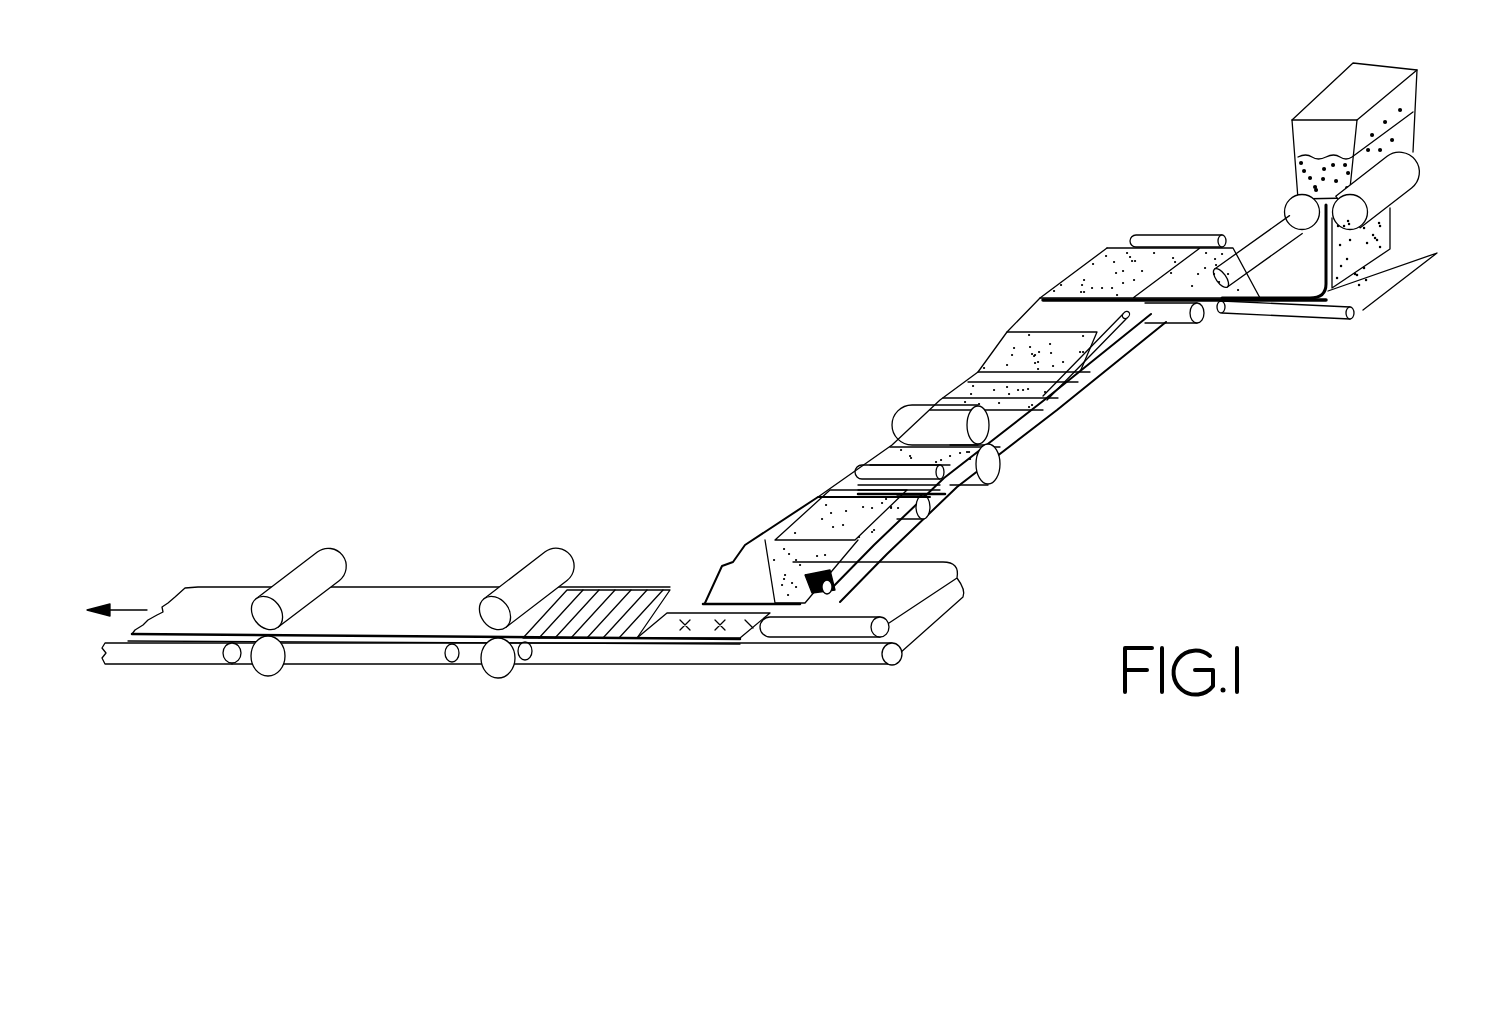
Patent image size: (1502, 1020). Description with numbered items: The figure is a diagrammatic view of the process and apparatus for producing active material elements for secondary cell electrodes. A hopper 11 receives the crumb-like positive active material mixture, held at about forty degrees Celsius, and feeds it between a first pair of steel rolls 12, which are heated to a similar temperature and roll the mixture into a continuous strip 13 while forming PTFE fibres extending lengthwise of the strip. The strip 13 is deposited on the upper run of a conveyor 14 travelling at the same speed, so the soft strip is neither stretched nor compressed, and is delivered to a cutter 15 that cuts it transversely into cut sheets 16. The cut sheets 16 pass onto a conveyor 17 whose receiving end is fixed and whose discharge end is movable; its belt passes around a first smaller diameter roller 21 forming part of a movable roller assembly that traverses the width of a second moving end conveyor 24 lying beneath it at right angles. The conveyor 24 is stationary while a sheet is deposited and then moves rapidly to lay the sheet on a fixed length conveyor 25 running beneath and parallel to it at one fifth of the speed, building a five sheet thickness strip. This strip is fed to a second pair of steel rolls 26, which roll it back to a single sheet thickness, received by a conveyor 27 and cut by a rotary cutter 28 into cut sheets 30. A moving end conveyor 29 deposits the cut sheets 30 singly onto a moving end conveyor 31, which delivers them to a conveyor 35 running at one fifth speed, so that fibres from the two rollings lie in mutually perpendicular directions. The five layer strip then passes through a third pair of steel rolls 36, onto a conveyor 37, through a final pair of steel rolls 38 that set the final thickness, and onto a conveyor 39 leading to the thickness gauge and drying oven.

The hopper 11 is at (1418, 86).
The first pair of steel rolls 12 is at (1413, 165).
The continuous strip 13 is at (1353, 250).
The conveyor 14 is at (1286, 314).
The cutter 15 is at (1272, 232).
The cut sheets 16 is at (1128, 275).
The conveyor 17 is at (1151, 320).
The first smaller diameter roller 21 is at (1043, 300).
The second moving end conveyor 24 is at (1097, 342).
The fixed length conveyor 25 is at (1050, 406).
The second pair of steel rolls 26 is at (910, 424).
The conveyor 27 is at (957, 488).
The rotary cutter 28 is at (858, 470).
The moving end conveyor 29 is at (882, 530).
The cut sheets 30 is at (767, 572).
The moving end conveyor 31 is at (836, 598).
The conveyor 35 is at (737, 647).
The third pair of steel rolls 36 is at (548, 553).
The conveyor 37 is at (372, 657).
The final pair of steel rolls 38 is at (325, 553).
The conveyor 39 is at (177, 653).